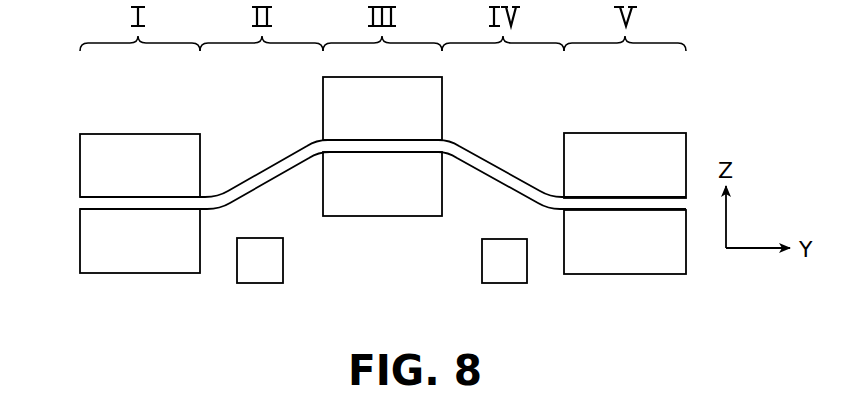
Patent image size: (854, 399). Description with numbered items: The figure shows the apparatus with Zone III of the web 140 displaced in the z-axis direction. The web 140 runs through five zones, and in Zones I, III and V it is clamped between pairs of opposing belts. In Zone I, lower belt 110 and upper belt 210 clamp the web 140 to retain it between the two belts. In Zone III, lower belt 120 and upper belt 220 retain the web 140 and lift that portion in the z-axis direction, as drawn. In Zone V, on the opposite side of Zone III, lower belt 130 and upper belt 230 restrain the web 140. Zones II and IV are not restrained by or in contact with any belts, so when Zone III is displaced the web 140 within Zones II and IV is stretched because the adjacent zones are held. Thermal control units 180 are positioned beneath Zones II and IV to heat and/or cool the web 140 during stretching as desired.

The lower belt 110 is at (76, 243).
The lower belt 120 is at (373, 219).
The lower belt 130 is at (601, 278).
The web 140 is at (82, 203).
The thermal control units 180 is at (259, 283).
The upper belt 210 is at (76, 160).
The upper belt 220 is at (319, 106).
The upper belt 230 is at (561, 160).